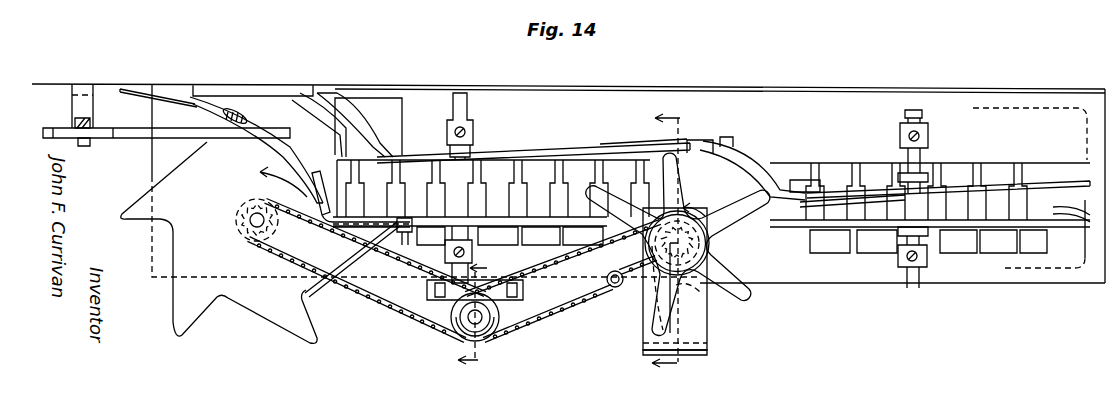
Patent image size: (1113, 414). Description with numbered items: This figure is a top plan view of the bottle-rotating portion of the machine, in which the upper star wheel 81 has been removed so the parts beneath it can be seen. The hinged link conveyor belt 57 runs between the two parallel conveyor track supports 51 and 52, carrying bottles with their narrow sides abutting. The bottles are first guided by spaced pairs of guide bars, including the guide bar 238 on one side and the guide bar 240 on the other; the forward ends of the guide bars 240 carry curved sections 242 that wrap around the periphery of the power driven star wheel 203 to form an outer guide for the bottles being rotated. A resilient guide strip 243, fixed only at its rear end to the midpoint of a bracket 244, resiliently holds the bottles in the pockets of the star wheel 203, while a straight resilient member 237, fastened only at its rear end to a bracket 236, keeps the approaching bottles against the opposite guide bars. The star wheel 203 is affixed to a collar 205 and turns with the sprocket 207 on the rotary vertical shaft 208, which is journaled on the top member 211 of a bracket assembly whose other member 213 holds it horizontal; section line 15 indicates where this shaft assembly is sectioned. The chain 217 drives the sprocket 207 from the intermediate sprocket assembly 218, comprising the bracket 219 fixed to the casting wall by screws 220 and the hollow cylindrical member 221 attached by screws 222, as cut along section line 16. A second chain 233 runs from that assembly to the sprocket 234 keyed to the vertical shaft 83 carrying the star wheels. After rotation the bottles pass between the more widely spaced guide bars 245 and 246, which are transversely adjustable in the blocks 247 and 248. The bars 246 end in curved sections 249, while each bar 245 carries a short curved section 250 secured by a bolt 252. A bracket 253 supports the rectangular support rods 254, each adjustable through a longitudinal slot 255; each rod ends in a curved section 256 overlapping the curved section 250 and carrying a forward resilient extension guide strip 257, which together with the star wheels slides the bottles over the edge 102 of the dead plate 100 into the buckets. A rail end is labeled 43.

The resilient extension guide strip 257 is at (143, 95).
The right edge of dead plate 102 is at (290, 100).
The curved section 249 is at (363, 110).
The dead plate 100 is at (398, 110).
The block 248 is at (474, 133).
The short curved section 250 is at (342, 162).
The curved section 256 is at (283, 149).
The rectangular support rod 254 is at (133, 128).
The bracket 253 is at (72, 107).
The longitudinal slot 255 is at (92, 138).
The star wheel 81 is at (222, 190).
The vertical shaft 83 is at (240, 217).
The sprocket 234 is at (263, 240).
The chain 233 is at (370, 298).
The intermediate sprocket assembly 218 is at (426, 335).
The rotary vertical shaft 208 is at (470, 337).
The hollow cylindrical member 221 is at (505, 318).
The screws 220 is at (503, 314).
The screws 222 is at (510, 283).
The bracket 219 is at (520, 280).
The chain 217 is at (578, 305).
The sprocket 207 is at (620, 287).
The collar 205 is at (717, 250).
The power driven star wheel 203 is at (710, 288).
The top member of bracket assembly 211 is at (700, 318).
The bracket assembly member 213 is at (645, 353).
The section line 15- 15 is at (682, 234).
The section line 16- 16 is at (486, 317).
The guide bars 245 is at (497, 213).
The block 247 is at (470, 256).
The bolt 252 is at (400, 232).
The guide bars 246 is at (558, 150).
The resilient guide strip 243 is at (707, 142).
The curved sections 242 is at (743, 160).
The bracket 244 is at (803, 180).
The straight resilient member 237 is at (833, 196).
The guide bar 240 is at (960, 185).
The bracket 236 is at (933, 167).
The rail end 43 is at (1088, 218).
The conveyor track support 52 is at (960, 96).
The hinged link conveyor belt 57 is at (957, 247).
The conveyor track support 51 is at (853, 278).
The guide bar 238 is at (995, 225).